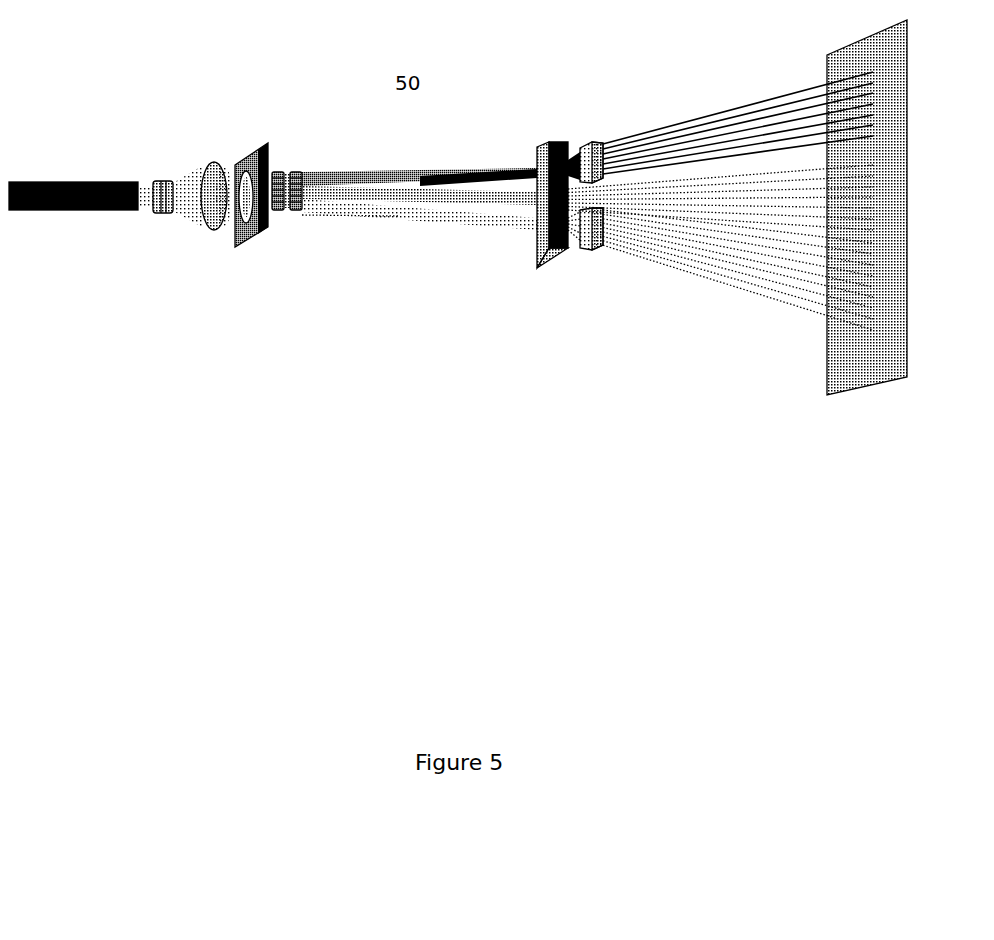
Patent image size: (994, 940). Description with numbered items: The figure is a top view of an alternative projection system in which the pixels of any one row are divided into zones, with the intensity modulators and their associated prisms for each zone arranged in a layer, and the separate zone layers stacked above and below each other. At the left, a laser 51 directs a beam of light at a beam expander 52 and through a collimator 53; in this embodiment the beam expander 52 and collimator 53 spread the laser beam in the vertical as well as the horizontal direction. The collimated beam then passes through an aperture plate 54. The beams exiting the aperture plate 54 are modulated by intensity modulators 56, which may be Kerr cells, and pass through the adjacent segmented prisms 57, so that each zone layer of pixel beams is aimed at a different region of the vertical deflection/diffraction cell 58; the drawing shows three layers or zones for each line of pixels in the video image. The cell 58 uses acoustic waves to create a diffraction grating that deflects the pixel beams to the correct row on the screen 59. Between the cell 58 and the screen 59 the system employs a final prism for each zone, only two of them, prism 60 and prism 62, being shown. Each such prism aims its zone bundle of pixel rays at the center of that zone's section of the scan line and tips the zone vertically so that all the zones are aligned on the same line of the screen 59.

The laser 51 is at (81, 208).
The beam expander 52 is at (130, 245).
The collimator 53 is at (175, 269).
The aperture plate 54 is at (253, 249).
The intensity modulators 56 is at (285, 214).
The second microlens array 57 is at (291, 229).
The vertical deflection/diffraction cell 58 is at (552, 213).
The screen 59 is at (854, 207).
The prism 60 is at (592, 151).
The prism 62 is at (591, 241).